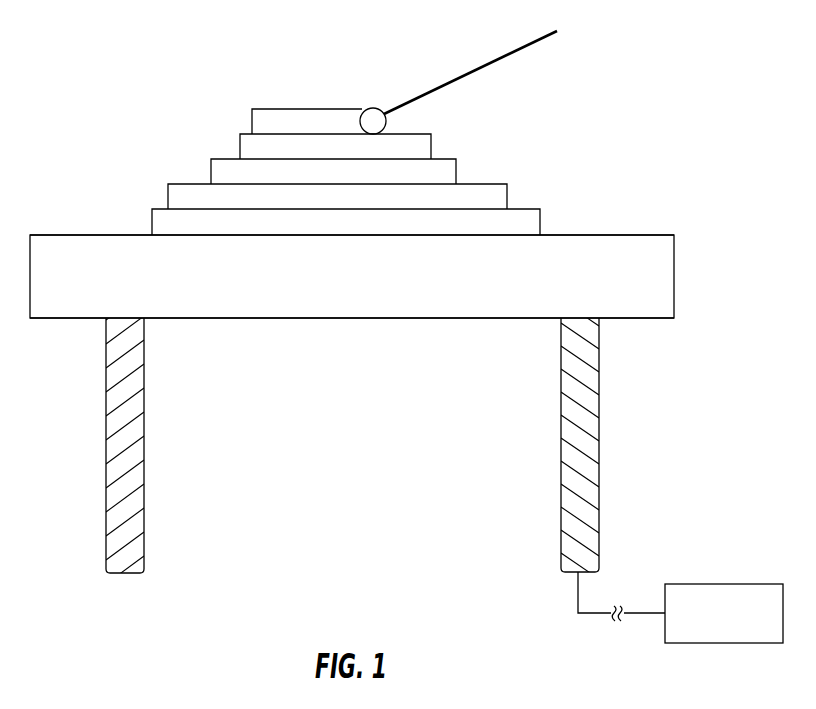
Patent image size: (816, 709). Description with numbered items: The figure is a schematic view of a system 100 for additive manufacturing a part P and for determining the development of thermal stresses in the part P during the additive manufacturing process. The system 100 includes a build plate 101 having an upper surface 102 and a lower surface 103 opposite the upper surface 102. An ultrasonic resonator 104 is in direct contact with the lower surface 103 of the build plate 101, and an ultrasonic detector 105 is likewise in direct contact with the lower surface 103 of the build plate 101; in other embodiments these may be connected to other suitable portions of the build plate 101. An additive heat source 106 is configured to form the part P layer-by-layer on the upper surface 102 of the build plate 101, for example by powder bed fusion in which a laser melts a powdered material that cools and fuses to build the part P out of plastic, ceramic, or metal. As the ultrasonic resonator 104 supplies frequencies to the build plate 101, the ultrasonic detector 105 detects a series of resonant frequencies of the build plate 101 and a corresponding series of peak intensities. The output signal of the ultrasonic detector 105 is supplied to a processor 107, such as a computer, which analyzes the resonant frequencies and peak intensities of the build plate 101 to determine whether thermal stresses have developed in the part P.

The system 100 is at (108, 56).
The build plate 101 is at (657, 281).
The upper surface 102 is at (652, 234).
The lower surface 103 is at (652, 320).
The ultrasonic resonator 104 is at (106, 443).
The ultrasonic detector 105 is at (561, 443).
The additive heat source 106 is at (467, 75).
The processor 107 is at (723, 584).
The part P is at (203, 153).